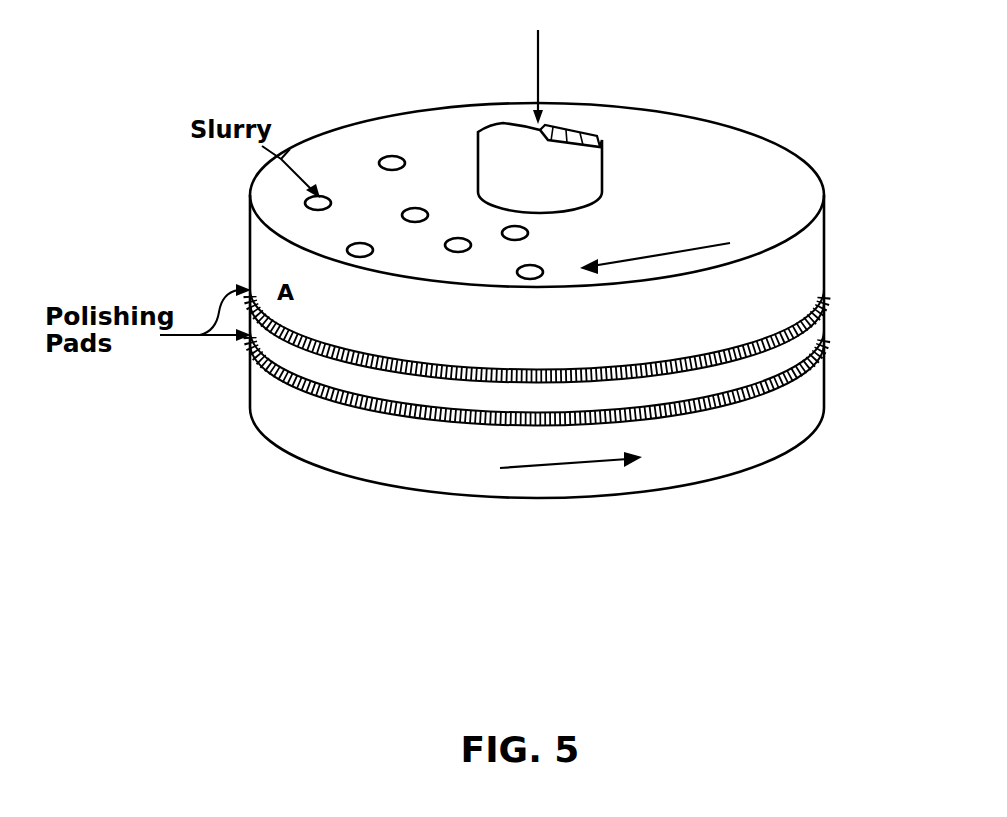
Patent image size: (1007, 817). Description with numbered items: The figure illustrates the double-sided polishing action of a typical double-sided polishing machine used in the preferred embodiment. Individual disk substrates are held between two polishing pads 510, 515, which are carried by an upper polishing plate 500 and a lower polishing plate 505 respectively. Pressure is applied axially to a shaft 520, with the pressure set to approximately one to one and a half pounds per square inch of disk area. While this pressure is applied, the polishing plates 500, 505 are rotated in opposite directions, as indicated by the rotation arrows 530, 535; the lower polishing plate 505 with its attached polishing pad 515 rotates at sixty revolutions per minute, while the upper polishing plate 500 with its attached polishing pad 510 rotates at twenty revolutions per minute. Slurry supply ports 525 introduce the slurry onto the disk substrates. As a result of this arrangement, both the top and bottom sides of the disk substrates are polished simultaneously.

The upper polishing plate 500 is at (791, 150).
The lower polishing plate 505 is at (824, 379).
The polishing pad 510 is at (249, 284).
The polishing pad 515 is at (253, 352).
The shaft 520 is at (572, 138).
The slurry supply ports 525 is at (394, 152).
The rotation arrow 530 is at (645, 258).
The rotation arrow 535 is at (572, 468).